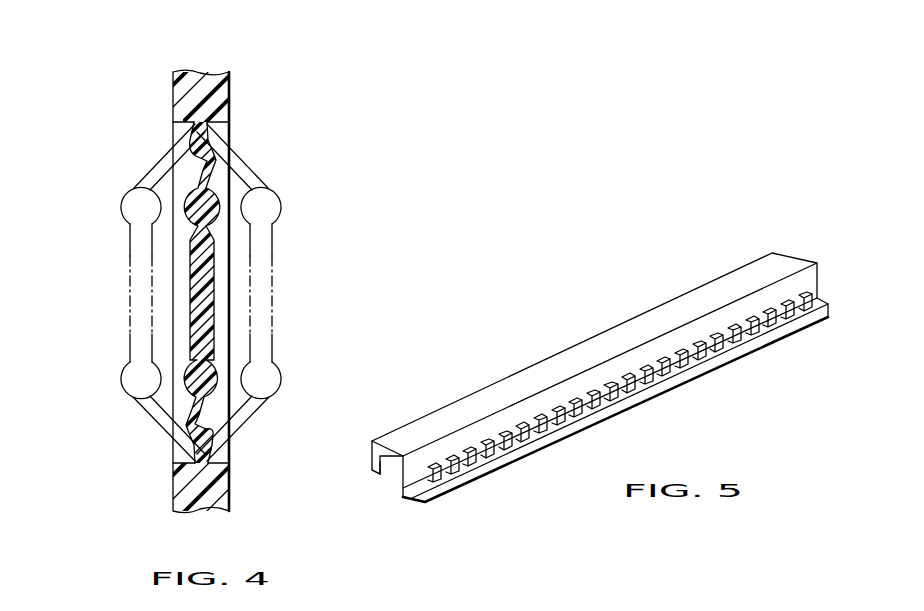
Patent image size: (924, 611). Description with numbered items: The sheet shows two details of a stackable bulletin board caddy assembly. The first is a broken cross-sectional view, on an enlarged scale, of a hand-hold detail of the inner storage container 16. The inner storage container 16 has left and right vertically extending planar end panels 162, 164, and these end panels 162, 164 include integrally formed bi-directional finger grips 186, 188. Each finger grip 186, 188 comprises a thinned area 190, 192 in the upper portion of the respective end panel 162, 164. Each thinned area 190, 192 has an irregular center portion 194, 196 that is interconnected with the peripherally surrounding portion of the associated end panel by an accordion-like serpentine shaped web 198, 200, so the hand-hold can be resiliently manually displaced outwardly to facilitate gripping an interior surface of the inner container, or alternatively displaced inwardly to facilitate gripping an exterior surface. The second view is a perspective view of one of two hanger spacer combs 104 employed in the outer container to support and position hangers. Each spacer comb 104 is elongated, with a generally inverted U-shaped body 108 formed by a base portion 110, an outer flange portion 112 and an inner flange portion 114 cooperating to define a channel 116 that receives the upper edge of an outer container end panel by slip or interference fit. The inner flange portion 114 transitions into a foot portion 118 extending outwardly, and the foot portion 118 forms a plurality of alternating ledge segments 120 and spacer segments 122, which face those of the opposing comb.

In FIG. 4, the inner storage container 16 is at (202, 306).
In FIG. 4, the left end panel 162 is at (181, 282).
In FIG. 4, the right end panel 164 is at (178, 93).
In FIG. 4, the bi-directional finger grip 186 is at (95, 241).
In FIG. 4, the bi-directional finger grip 188 is at (104, 174).
In FIG. 4, the thinned area 190 is at (267, 218).
In FIG. 4, the thinned area 192 is at (240, 125).
In FIG. 4, the irregular center portion 194 is at (135, 292).
In FIG. 4, the irregular center portion 196 is at (192, 268).
In FIG. 4, the accordion-like serpentine shaped web 198 is at (202, 293).
In FIG. 4, the accordion-like serpentine shaped web 200 is at (203, 175).
In FIG. 5, the hanger spacer comb 104 is at (590, 362).
In FIG. 5, the inverted U-shaped body 108 is at (590, 419).
In FIG. 5, the base portion 110 is at (393, 447).
In FIG. 5, the outer flange portion 112 is at (373, 459).
In FIG. 5, the inner flange portion 114 is at (405, 475).
In FIG. 5, the channel 116 is at (395, 476).
In FIG. 5, the foot portion 118 is at (420, 492).
In FIG. 5, the ledge segments 120 is at (733, 345).
In FIG. 5, the spacer segments 122 is at (478, 460).